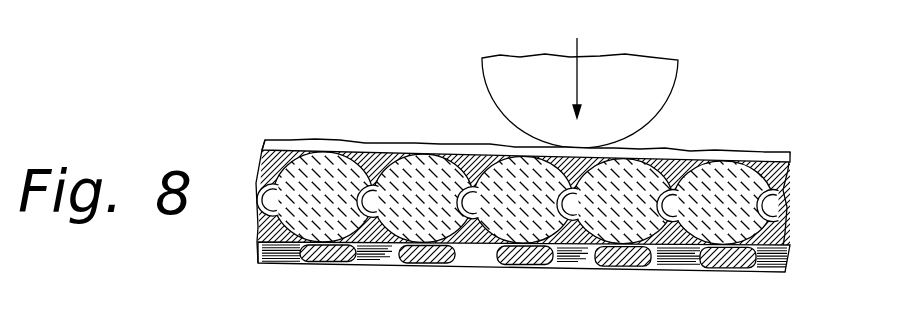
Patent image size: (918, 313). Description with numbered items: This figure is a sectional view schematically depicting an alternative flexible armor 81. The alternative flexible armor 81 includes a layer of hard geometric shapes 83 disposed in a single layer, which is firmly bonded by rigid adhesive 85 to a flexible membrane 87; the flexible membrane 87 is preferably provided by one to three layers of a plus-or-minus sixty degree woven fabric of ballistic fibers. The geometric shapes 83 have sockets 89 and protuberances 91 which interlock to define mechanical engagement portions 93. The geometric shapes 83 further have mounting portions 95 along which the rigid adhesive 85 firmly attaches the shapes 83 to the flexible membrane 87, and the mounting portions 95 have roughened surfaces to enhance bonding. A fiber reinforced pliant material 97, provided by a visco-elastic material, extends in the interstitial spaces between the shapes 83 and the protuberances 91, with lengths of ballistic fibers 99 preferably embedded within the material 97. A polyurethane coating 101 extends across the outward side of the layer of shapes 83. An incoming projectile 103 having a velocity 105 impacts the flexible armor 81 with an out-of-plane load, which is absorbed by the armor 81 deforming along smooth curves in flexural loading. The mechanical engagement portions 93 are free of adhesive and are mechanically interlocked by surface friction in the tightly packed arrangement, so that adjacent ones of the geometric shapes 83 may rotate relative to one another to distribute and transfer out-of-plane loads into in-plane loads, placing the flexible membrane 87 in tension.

The alternative flexible armor 81 is at (287, 130).
The hard geometric shapes 83 is at (317, 160).
The rigid adhesive 85 is at (349, 244).
The flexible membrane 87 is at (277, 258).
The sockets 89 is at (461, 230).
The protuberances 91 is at (571, 247).
The mechanical engagement portions 93 is at (669, 186).
The mounting portions 95 is at (629, 262).
The fiber reinforced pliant material 97 is at (766, 262).
The ballistic fibers 99 is at (779, 185).
The polyurethane coating 101 is at (399, 149).
The incoming projectile 103 is at (664, 78).
The velocity 105 is at (578, 40).